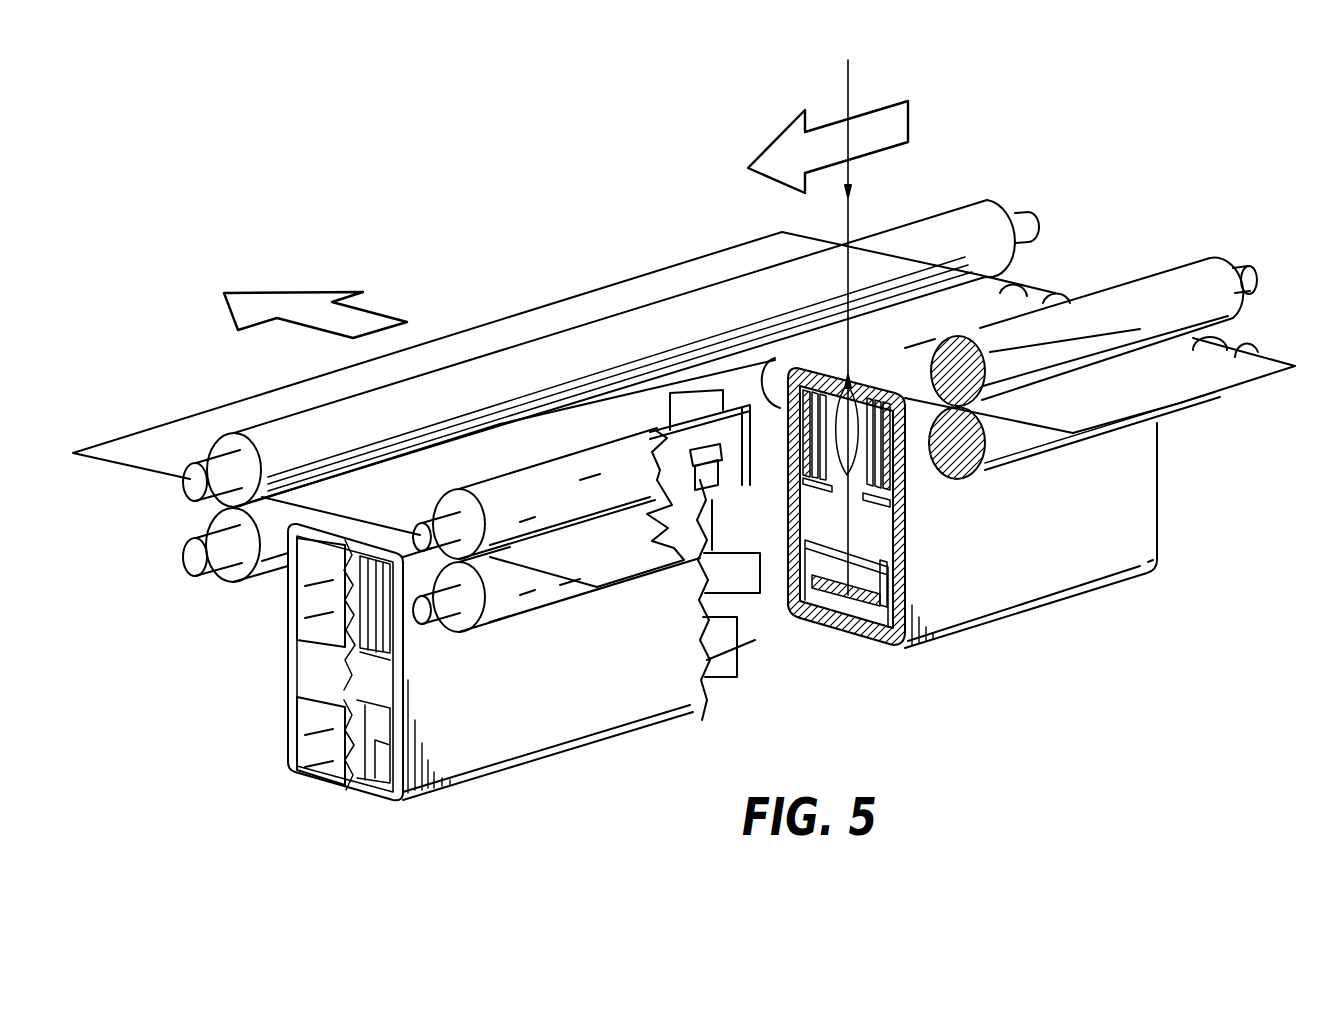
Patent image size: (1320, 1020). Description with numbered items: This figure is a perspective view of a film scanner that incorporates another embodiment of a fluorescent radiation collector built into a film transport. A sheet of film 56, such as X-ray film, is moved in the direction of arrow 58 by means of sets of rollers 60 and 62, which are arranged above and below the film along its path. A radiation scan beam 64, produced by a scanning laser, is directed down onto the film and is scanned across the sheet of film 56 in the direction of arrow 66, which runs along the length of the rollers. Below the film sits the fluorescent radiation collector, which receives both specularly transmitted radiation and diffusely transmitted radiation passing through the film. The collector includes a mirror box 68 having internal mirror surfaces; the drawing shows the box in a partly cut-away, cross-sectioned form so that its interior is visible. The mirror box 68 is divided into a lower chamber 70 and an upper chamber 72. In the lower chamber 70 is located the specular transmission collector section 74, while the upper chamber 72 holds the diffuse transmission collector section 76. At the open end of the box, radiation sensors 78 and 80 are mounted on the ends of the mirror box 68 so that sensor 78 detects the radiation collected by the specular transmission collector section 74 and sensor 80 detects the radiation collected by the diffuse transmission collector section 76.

The sheet of film 56 is at (153, 437).
The arrow 58 is at (323, 284).
The set of rollers 60 is at (1010, 205).
The set of rollers 62 is at (1152, 278).
The radiation scan beam 64 is at (848, 230).
The arrow 66 is at (915, 107).
The mirror box 68 is at (907, 462).
The lower chamber 70 is at (790, 533).
The upper chamber 72 is at (772, 378).
The specular transmission collector section 74 is at (893, 602).
The diffuse transmission collector section 76 is at (843, 480).
The radiation sensor 78 is at (300, 722).
The radiation sensor 80 is at (296, 610).